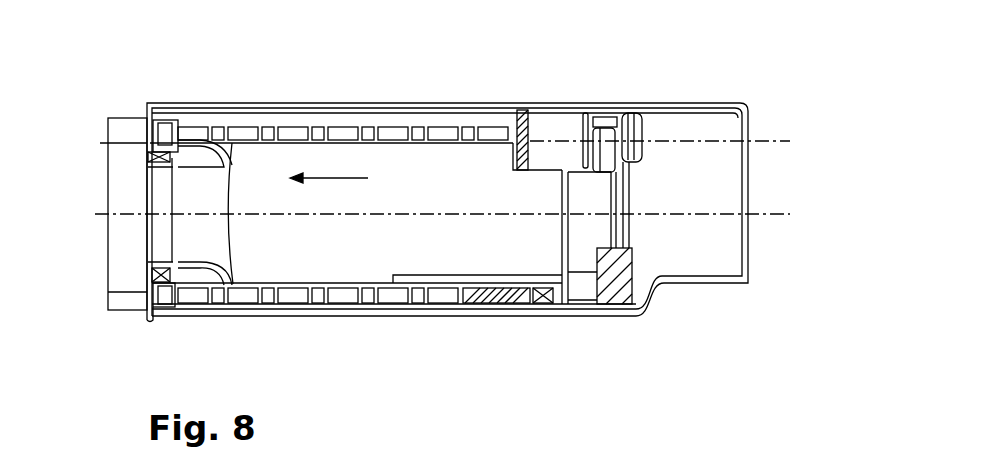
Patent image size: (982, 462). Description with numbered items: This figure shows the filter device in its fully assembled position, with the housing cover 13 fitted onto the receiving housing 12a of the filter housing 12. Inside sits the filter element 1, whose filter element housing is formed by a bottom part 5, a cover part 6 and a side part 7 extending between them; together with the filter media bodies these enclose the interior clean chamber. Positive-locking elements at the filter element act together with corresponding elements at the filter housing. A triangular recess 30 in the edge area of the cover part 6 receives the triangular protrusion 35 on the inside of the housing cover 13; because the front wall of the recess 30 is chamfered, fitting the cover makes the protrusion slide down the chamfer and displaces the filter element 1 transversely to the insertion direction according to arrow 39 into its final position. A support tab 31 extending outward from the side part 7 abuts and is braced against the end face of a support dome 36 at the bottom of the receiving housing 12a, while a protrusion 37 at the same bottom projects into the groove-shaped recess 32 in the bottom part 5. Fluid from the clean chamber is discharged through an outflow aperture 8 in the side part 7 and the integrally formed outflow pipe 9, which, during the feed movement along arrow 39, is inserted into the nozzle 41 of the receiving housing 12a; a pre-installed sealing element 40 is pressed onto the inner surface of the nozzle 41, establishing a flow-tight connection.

The filter element 1 is at (252, 105).
The bottom part 5 is at (320, 284).
The cover part 6 is at (395, 125).
The side part 7 is at (562, 200).
The outflow aperture 8 is at (147, 198).
The outflow pipe 9 is at (147, 246).
The filter housing 12 is at (324, 314).
The receiving housing 12a is at (393, 315).
The housing cover 13 is at (334, 103).
The triangular recess 30 is at (540, 165).
The support tab 31 is at (592, 252).
The groove-shaped recess 32 is at (431, 287).
The triangular protrusion 35 is at (541, 108).
The support dome 36 is at (621, 308).
The protrusion 37 is at (496, 308).
The arrow 39 is at (334, 178).
The sealing element 40 is at (165, 133).
The nozzle 41 is at (128, 292).